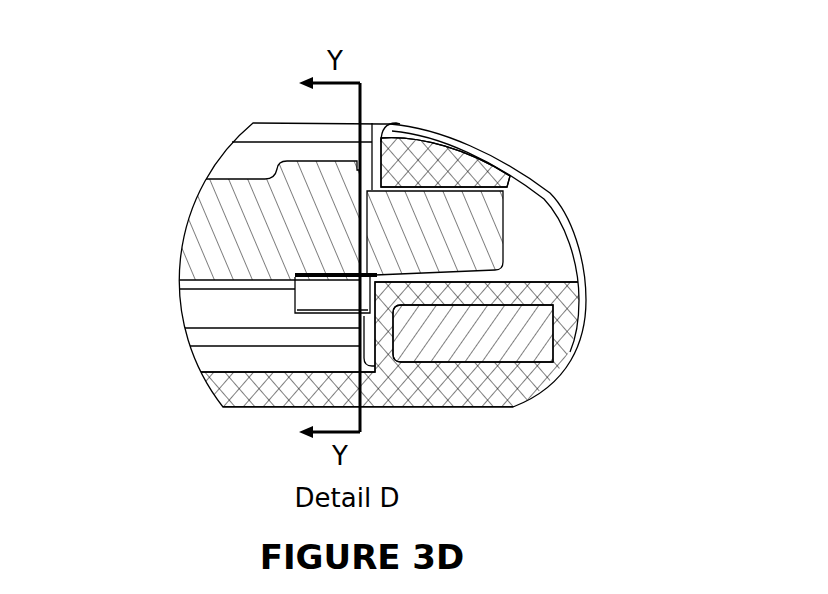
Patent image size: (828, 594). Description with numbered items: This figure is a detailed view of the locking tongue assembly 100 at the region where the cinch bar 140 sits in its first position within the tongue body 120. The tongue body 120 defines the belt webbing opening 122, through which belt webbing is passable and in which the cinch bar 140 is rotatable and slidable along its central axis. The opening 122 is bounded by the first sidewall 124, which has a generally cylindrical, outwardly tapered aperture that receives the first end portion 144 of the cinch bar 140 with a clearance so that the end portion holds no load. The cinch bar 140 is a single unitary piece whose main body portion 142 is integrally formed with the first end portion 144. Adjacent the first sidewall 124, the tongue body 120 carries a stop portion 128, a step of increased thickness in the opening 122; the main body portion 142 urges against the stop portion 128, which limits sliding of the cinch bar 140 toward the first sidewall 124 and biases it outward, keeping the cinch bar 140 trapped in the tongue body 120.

The tongue assembly 100 is at (168, 76).
The tongue body 120 is at (570, 323).
The belt webbing opening 122 is at (237, 305).
The first sidewall 124 is at (383, 163).
The stop portion 128 is at (372, 281).
The cinch bar 140 is at (303, 170).
The main body portion 142 is at (235, 217).
The first end portion 144 is at (457, 217).